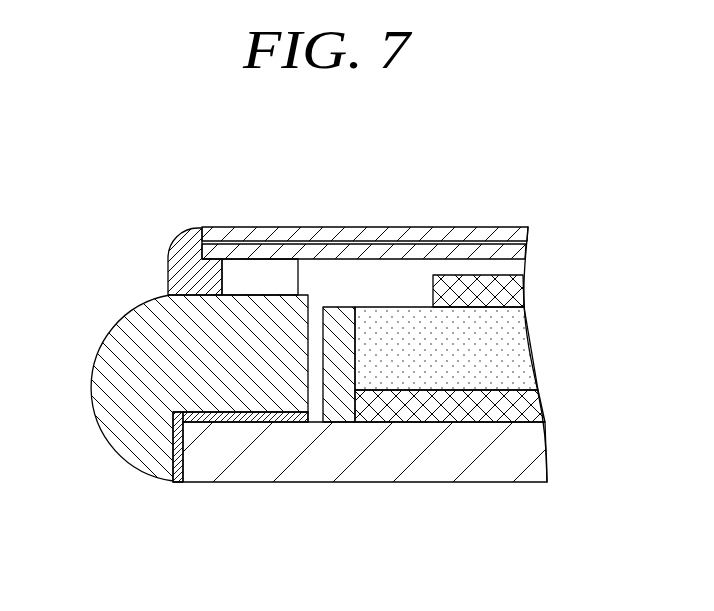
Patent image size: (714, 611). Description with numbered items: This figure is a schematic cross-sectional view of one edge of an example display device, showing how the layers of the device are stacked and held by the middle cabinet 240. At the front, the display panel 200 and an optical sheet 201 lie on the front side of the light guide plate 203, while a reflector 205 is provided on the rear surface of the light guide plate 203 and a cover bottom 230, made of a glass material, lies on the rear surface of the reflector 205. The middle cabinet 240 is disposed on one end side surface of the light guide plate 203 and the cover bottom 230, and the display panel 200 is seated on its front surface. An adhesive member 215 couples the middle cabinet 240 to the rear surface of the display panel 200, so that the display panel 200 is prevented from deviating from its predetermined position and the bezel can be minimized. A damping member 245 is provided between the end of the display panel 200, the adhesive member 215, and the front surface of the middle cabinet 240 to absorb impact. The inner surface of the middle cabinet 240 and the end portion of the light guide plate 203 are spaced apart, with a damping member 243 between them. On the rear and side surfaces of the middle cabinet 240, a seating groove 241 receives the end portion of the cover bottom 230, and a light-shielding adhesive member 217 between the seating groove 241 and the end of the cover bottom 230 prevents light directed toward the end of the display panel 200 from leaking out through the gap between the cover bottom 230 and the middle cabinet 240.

The display panel 200 is at (438, 196).
The optical sheet 201 is at (513, 292).
The light guide plate 203 is at (522, 348).
The reflector 205 is at (538, 407).
The adhesive member 215 is at (232, 277).
The light-shielding adhesive member 217 is at (188, 484).
The cover bottom 230 is at (368, 478).
The middle cabinet 240 is at (115, 397).
The seating groove 241 is at (173, 450).
The damping member 243 is at (345, 307).
The damping member 245 is at (180, 270).